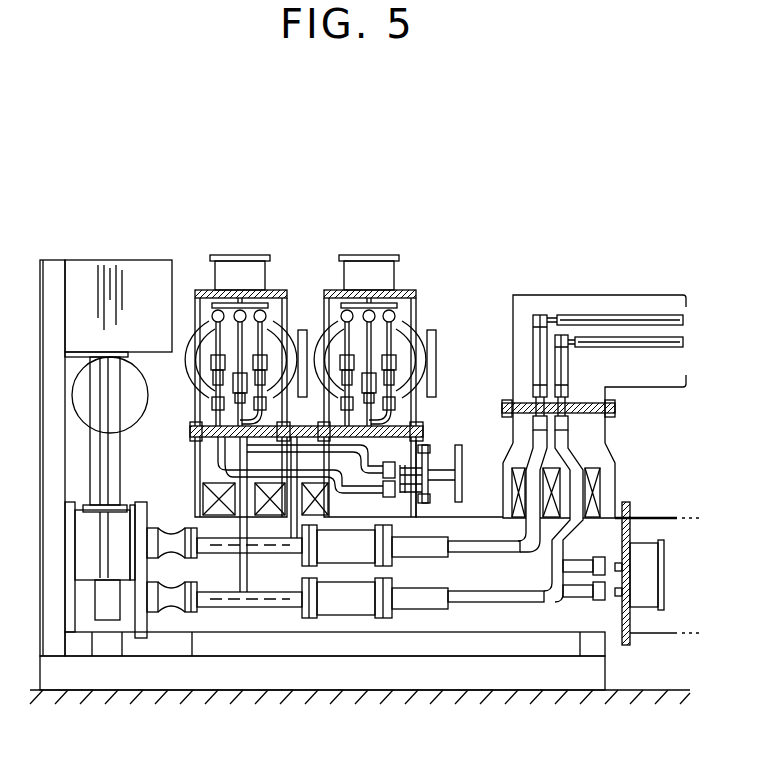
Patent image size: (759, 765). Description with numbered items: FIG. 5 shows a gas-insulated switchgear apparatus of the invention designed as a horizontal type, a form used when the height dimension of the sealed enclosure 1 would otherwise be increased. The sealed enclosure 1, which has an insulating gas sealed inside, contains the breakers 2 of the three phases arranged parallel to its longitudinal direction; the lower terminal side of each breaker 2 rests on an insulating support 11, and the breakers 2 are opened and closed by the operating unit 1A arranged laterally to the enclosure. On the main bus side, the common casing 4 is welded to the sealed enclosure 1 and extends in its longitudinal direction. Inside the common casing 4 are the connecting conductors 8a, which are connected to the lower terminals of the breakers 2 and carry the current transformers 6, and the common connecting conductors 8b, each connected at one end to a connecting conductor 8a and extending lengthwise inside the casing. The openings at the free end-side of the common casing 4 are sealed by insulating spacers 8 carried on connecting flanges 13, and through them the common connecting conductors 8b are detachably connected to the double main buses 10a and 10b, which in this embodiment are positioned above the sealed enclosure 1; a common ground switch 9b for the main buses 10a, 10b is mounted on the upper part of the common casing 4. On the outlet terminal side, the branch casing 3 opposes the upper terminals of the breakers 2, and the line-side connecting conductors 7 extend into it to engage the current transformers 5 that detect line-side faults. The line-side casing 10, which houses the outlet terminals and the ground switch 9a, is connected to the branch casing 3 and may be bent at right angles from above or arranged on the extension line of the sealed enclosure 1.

The sealed enclosure 1 is at (425, 633).
The operating unit 1A is at (88, 268).
The breakers 2 is at (345, 616).
The branch casing 3 is at (616, 470).
The common casing 4 is at (195, 460).
The current transformers 5 is at (601, 492).
The current transformers 6 is at (203, 497).
The line-side connecting conductors 7 is at (577, 452).
The insulating spacer 8 is at (190, 428).
The connecting conductors 8a is at (235, 576).
The common connecting conductors 8b is at (422, 441).
The ground switch 9a is at (647, 597).
The common ground switch 9b is at (462, 482).
The line-side casing 10 is at (590, 295).
The main bus 10a is at (418, 303).
The main bus 10b is at (287, 302).
The insulating support 11 is at (188, 612).
The connecting flanges 13 is at (424, 428).